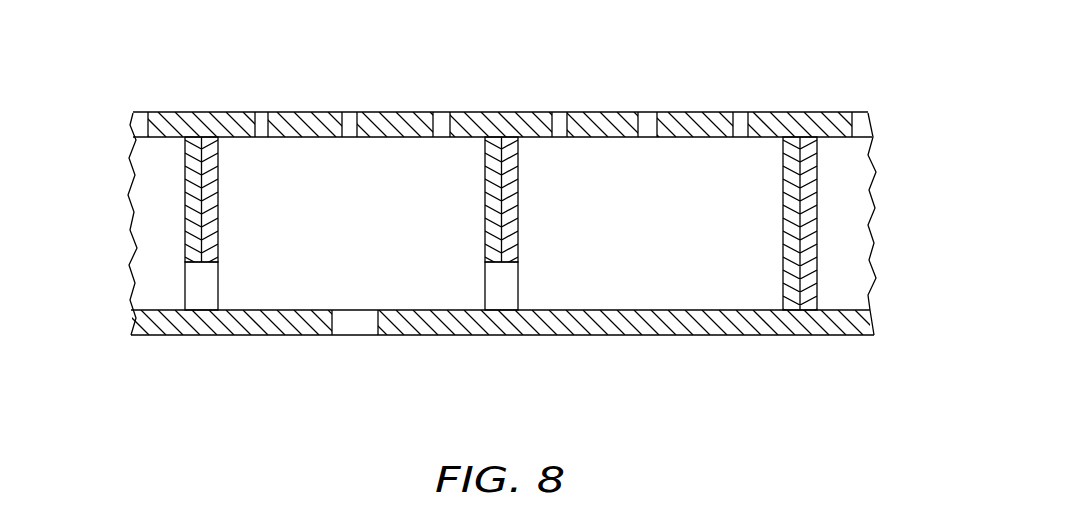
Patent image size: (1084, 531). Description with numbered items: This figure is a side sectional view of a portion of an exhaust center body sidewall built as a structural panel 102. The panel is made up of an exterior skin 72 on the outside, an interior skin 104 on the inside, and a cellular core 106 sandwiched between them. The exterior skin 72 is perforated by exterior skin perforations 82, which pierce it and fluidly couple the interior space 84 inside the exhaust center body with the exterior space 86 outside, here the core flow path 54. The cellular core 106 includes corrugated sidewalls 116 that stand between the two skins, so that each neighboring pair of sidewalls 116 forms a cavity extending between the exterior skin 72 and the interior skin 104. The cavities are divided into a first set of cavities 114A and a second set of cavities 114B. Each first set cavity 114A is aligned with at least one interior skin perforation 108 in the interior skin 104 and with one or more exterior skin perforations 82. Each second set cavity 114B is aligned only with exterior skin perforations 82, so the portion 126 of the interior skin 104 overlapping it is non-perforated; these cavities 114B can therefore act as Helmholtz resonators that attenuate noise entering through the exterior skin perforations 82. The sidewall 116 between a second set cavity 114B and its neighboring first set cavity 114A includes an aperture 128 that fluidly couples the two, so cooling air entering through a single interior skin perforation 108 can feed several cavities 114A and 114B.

The structural panel 102 is at (104, 88).
The exterior skin 72 is at (886, 113).
The core flow path 54 is at (500, 62).
The exterior space 86 is at (544, 42).
The exterior skin perforations 82 is at (265, 113).
The corrugated sidewalls 116 is at (185, 163).
The aperture 128 is at (212, 277).
The first set of cavities 114A is at (360, 253).
The second set of cavities 114B is at (158, 217).
The cellular core 106 is at (883, 140).
The interior skin 104 is at (886, 346).
The interior space 84 is at (532, 414).
The interior skin perforations 108 is at (350, 337).
The portion of the interior skin 126 is at (153, 348).